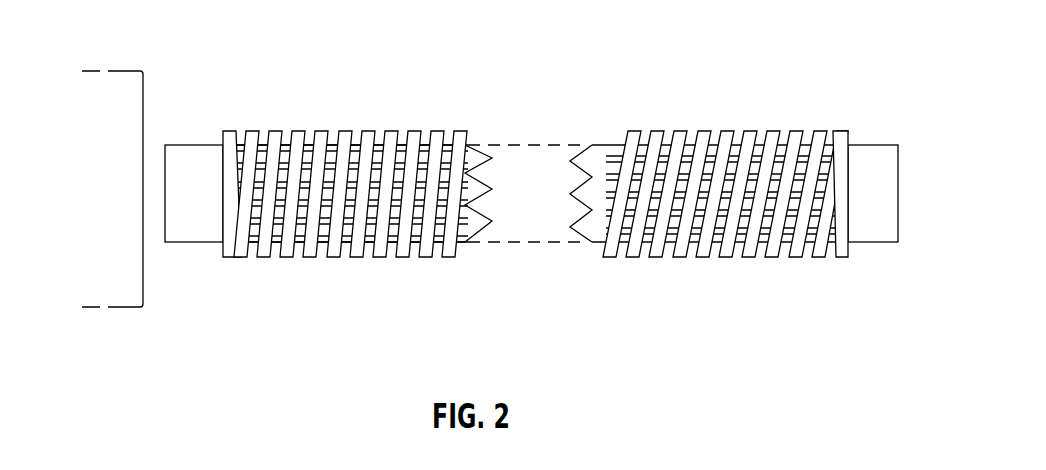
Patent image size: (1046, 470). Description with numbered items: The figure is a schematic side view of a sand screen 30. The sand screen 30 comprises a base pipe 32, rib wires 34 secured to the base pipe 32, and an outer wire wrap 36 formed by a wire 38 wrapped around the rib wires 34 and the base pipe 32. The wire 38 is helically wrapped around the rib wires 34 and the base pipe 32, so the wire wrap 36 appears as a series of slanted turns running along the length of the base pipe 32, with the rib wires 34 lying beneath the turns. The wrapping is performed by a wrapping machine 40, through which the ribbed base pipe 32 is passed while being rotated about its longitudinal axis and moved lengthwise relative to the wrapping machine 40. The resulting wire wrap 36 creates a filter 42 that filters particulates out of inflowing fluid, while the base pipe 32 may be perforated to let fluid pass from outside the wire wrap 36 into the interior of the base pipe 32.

The sand screen 30 is at (230, 64).
The base pipe 32 is at (876, 236).
The rib wires 34 is at (478, 191).
The wire wrap 36 is at (570, 216).
The wire 38 is at (637, 132).
The wrapping machine 40 is at (91, 64).
The filter 42 is at (852, 128).